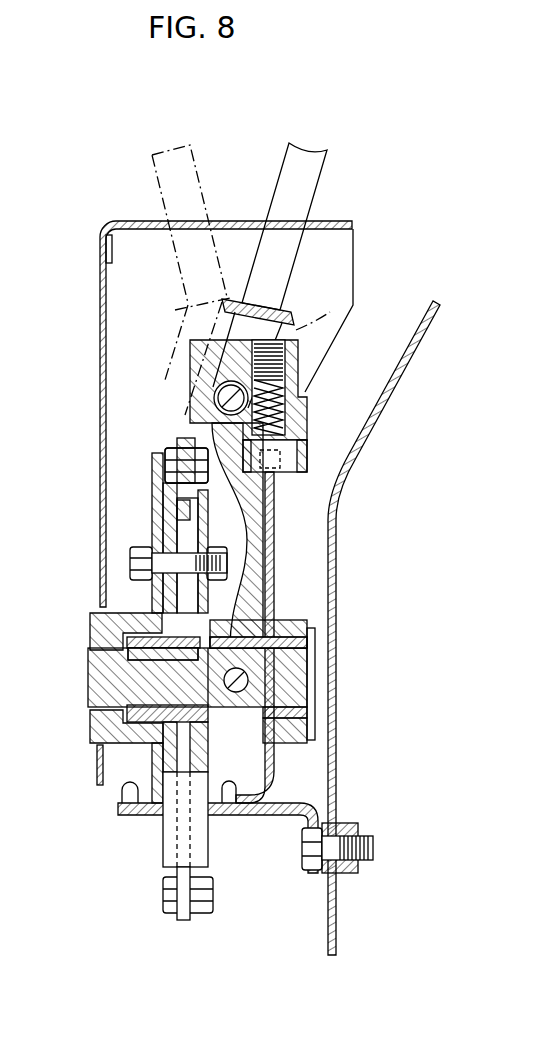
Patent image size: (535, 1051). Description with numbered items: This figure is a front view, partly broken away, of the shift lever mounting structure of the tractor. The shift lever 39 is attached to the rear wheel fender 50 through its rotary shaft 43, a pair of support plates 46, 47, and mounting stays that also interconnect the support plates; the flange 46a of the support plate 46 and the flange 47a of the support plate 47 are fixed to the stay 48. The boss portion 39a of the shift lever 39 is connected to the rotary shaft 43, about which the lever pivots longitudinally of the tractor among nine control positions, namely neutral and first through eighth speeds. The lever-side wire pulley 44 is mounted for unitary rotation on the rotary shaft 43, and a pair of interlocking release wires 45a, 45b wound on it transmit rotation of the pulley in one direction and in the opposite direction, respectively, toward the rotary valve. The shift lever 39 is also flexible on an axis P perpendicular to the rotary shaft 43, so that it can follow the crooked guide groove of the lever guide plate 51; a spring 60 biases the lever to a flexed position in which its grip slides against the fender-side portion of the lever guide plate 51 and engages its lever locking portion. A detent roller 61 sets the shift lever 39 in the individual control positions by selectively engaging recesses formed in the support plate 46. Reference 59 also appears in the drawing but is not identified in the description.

The lever guide plate 51 is at (131, 221).
The shift lever 39 is at (317, 180).
The spring 60 is at (330, 312).
The axis P is at (231, 398).
The detent roller 61 is at (293, 453).
The boss portion 39a is at (250, 585).
The support plate 46 is at (272, 540).
The flange 46a is at (236, 782).
The rear wheel fender 50 is at (337, 563).
The rotary shaft 43 is at (95, 688).
The lever-side wire pulley 44 is at (153, 516).
The interlocking release wire 45a is at (180, 505).
The interlocking release wire 45b is at (120, 447).
The support plate 47 is at (160, 530).
The flange 47a is at (120, 790).
The stay 48 is at (263, 817).
The bolt 59 is at (163, 855).